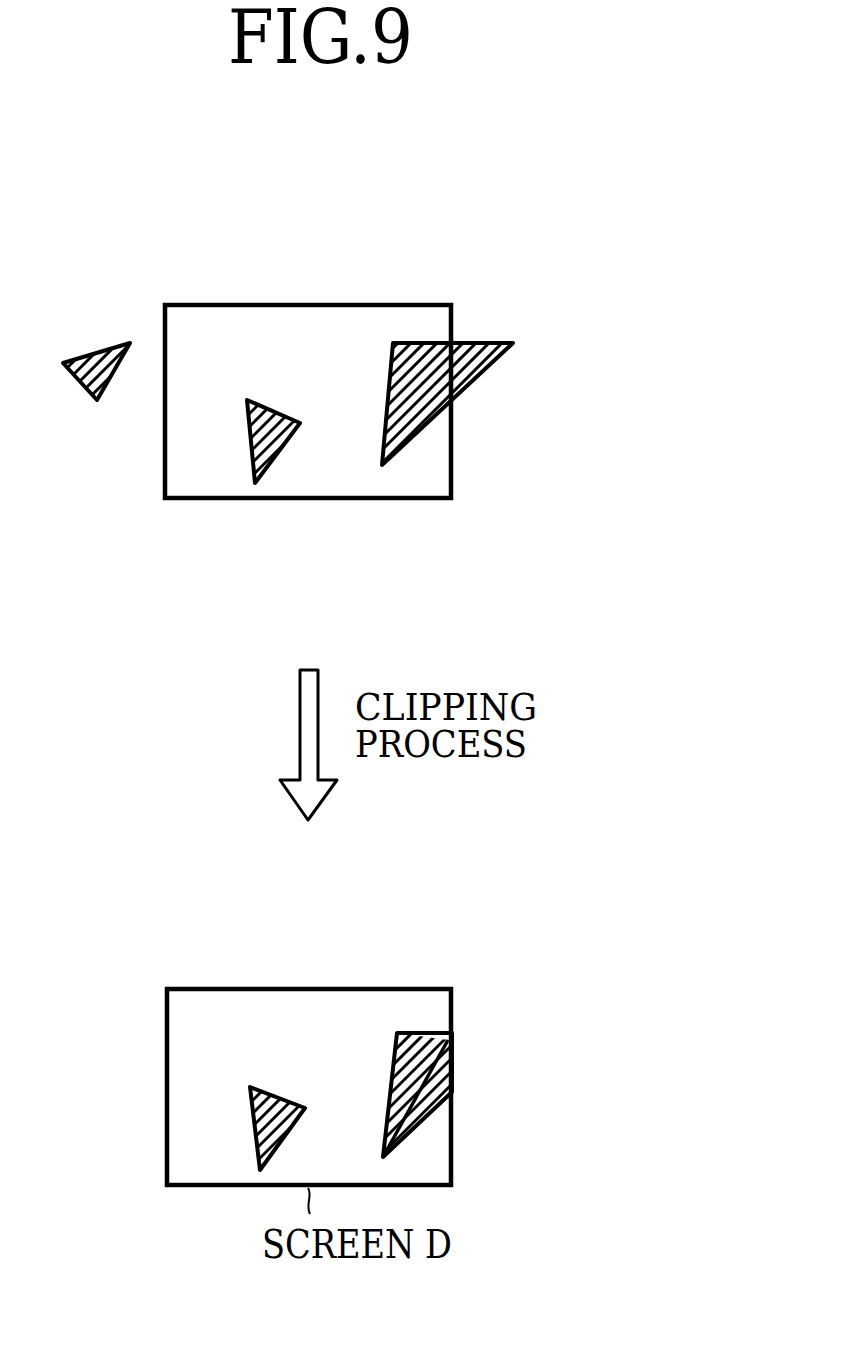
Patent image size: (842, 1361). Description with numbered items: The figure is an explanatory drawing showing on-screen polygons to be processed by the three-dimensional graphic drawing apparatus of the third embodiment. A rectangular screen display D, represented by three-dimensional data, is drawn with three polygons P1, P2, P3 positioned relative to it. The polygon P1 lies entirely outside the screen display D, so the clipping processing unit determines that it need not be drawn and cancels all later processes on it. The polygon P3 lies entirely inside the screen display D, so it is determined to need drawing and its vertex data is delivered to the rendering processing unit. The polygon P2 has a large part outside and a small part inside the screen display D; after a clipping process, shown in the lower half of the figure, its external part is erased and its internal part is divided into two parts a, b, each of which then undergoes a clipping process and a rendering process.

The polygon P1 is at (97, 352).
The polygon P2 is at (432, 343).
The polygon P3 is at (277, 407).
The screen display D is at (307, 502).
The part of polygon P2 a is at (392, 1073).
The part of polygon P2 b is at (453, 1137).